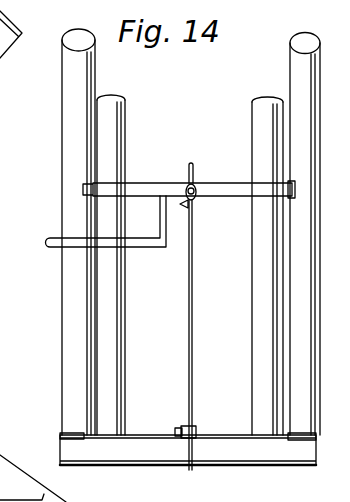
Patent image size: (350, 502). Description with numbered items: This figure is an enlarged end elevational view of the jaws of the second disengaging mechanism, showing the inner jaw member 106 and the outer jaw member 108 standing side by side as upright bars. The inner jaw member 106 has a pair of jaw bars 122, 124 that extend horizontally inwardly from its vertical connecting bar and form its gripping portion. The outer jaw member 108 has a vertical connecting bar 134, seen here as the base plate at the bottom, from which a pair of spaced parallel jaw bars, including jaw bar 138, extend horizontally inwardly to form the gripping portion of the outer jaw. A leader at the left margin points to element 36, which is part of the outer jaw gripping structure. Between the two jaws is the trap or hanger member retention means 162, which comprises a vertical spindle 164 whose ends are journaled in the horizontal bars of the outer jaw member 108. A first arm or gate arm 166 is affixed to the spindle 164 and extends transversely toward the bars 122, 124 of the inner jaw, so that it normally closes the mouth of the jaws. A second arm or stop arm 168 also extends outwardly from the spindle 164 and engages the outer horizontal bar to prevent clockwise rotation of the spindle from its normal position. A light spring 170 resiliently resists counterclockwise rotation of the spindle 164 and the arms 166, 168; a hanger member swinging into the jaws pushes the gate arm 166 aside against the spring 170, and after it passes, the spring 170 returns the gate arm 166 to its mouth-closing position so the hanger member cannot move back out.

The post 36 is at (77, 345).
The inner jaw member 106 is at (125, 373).
The outer jaw member 108 is at (305, 390).
The jaw bar 122 is at (123, 117).
The jaw bar 124 is at (258, 107).
The vertical connecting bar 134 is at (137, 457).
The jaw bar 138 is at (298, 407).
The hanger member retention means 162 is at (213, 205).
The vertical spindle 164 is at (210, 187).
The gate arm 166 is at (173, 172).
The stop arm 168 is at (116, 255).
The spring 170 is at (193, 330).